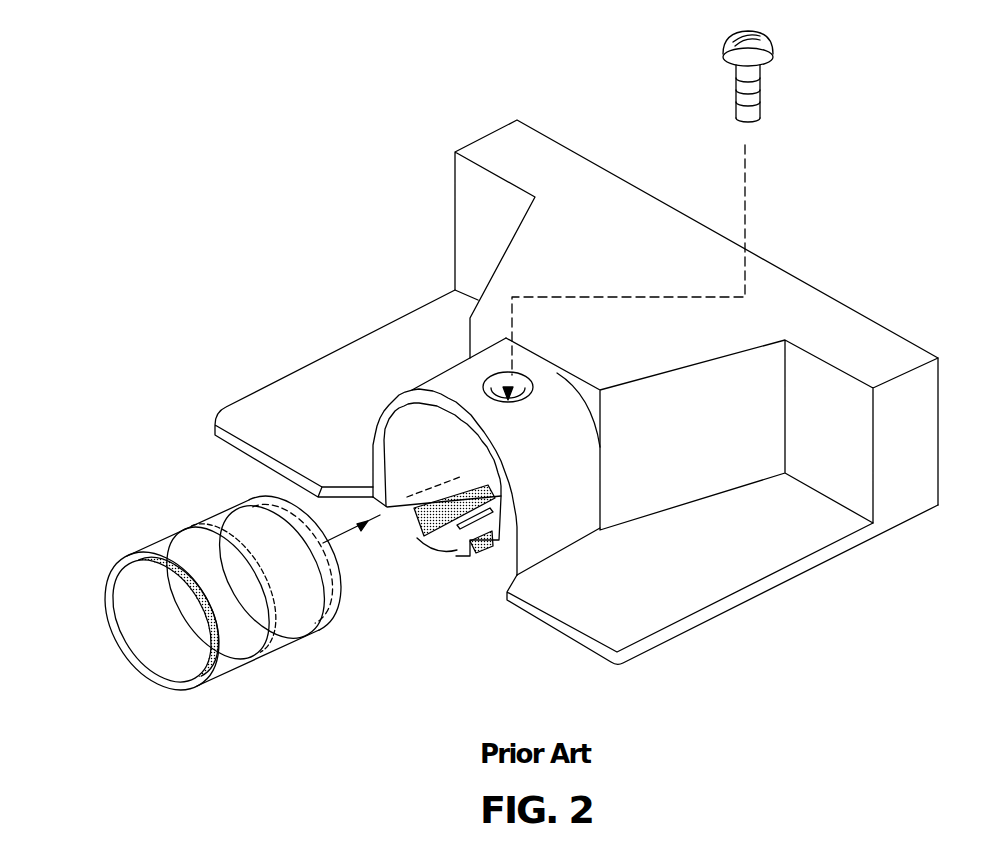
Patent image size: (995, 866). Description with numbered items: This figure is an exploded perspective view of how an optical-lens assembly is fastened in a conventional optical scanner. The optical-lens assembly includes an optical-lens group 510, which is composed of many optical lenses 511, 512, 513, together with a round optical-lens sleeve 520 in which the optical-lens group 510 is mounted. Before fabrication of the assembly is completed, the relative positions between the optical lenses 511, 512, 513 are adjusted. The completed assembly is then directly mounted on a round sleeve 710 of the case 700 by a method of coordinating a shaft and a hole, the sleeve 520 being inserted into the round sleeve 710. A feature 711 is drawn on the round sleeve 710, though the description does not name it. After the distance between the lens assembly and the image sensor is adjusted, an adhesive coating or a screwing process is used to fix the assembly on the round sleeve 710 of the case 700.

The optical-lens group 510 is at (204, 571).
The optical lens 511 is at (110, 575).
The optical lens 512 is at (197, 543).
The optical lens 513 is at (253, 554).
The round optical-lens sleeve 520 is at (112, 631).
The case 700 is at (727, 612).
The round sleeve 710 is at (430, 378).
The insert pad 711 is at (428, 547).